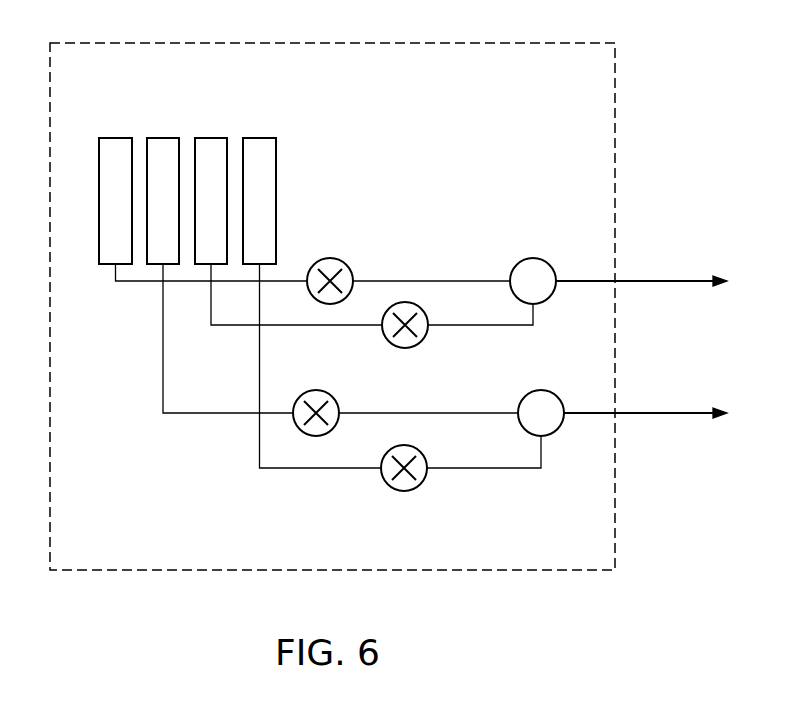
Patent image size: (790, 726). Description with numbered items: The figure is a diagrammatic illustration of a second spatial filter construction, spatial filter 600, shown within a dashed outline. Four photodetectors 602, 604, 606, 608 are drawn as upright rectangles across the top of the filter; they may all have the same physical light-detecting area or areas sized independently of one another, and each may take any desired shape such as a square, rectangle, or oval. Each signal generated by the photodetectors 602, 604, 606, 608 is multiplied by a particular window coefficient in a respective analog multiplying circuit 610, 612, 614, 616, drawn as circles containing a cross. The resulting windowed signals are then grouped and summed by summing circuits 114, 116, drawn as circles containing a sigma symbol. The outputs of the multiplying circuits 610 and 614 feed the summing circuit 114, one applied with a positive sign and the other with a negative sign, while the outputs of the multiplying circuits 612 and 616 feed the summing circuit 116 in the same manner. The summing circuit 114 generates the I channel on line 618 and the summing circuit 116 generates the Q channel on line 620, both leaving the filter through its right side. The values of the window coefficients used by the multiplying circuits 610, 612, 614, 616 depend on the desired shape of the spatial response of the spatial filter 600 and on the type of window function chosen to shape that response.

The spatial filter 600 is at (132, 571).
The photodetector 602 is at (118, 137).
The photodetector 604 is at (167, 137).
The photodetector 606 is at (216, 137).
The photodetector 608 is at (264, 137).
The analog multiplying circuit 610 is at (332, 258).
The analog multiplying circuit 612 is at (338, 399).
The analog multiplying circuit 614 is at (424, 338).
The analog multiplying circuit 616 is at (424, 481).
The summing circuit 114 is at (540, 258).
The summing circuit 116 is at (542, 390).
The line 618 is at (677, 278).
The line 620 is at (675, 414).